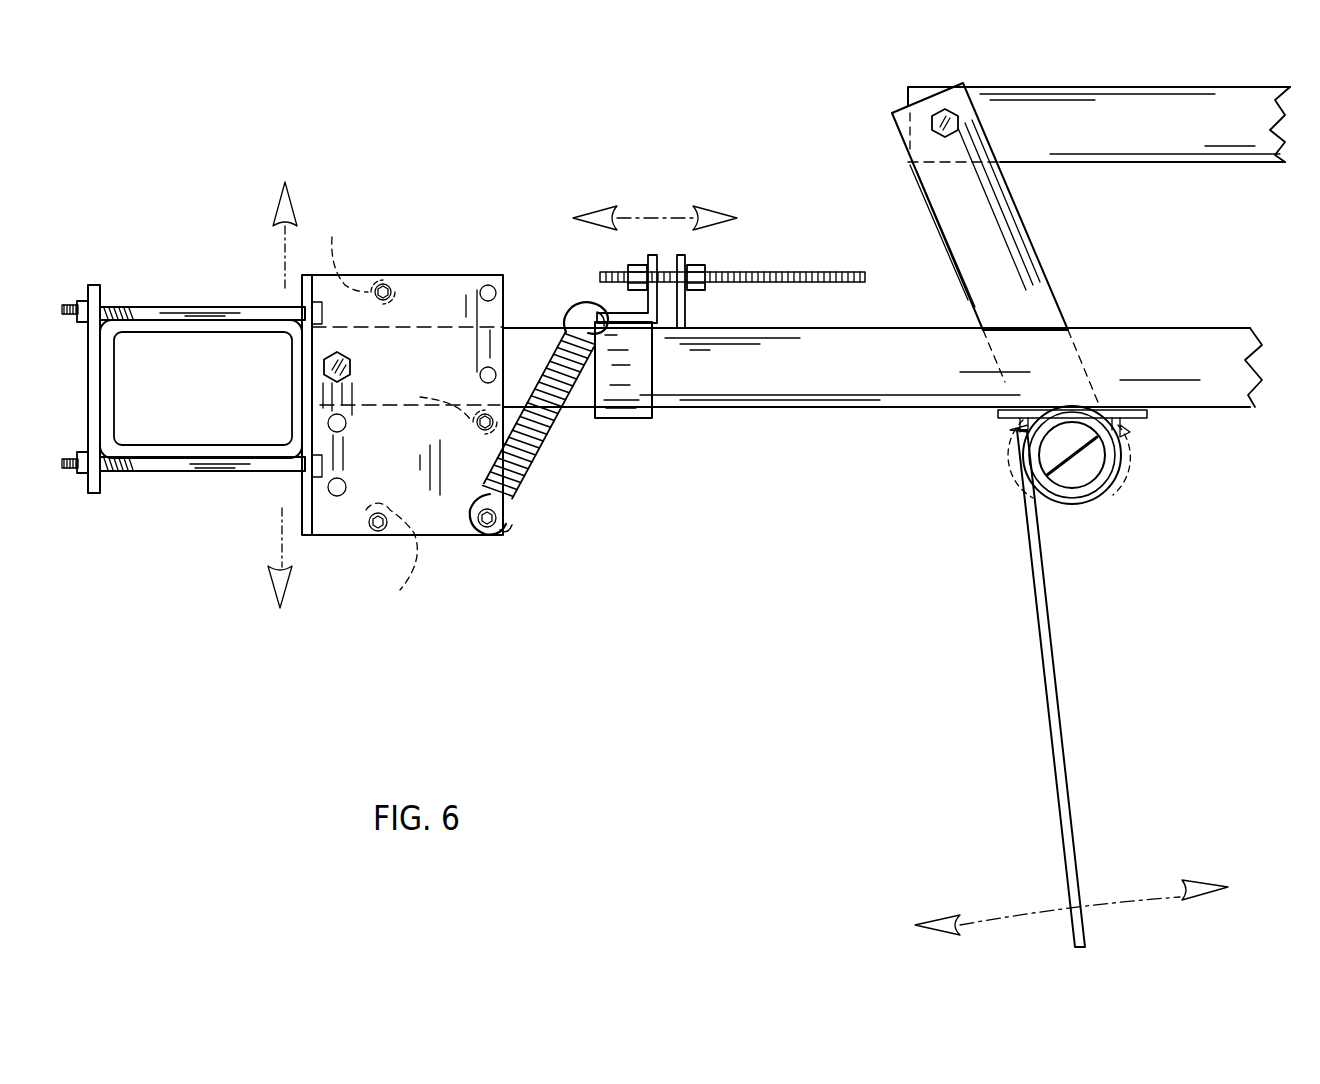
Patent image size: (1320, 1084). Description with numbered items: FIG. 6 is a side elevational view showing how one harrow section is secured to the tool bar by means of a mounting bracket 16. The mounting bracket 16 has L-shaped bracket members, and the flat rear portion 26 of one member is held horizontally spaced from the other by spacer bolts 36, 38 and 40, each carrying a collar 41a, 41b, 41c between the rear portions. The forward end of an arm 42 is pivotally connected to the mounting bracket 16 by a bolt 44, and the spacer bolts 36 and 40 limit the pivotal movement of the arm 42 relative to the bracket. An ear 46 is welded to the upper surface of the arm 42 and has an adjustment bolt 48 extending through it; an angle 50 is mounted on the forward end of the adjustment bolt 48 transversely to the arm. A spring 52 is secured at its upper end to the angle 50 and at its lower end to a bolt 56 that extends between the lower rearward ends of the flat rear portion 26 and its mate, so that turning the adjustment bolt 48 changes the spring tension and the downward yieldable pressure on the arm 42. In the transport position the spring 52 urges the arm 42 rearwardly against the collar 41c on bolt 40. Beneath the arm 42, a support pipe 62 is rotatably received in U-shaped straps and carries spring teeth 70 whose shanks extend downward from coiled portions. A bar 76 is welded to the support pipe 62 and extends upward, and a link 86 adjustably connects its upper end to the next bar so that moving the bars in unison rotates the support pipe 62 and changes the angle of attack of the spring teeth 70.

The mounting bracket 16 is at (437, 232).
The flat rear portion 26 is at (407, 405).
The spacer bolt 36 is at (384, 283).
The spacer bolt 38 is at (374, 536).
The spacer bolt 40 is at (477, 414).
The collar 41a is at (340, 253).
The collar 41b is at (392, 562).
The collar 41c is at (427, 400).
The arm 42 is at (920, 372).
The bolt 44 is at (322, 367).
The ear 46 is at (687, 259).
The adjustment bolt 48 is at (781, 272).
The angle 50 is at (647, 262).
The spring 52 is at (543, 458).
The bolt 56 is at (498, 534).
The support pipe 62 is at (1100, 482).
The spring tooth 70 is at (1060, 687).
The bar 76 is at (1010, 238).
The link 86 is at (1130, 147).